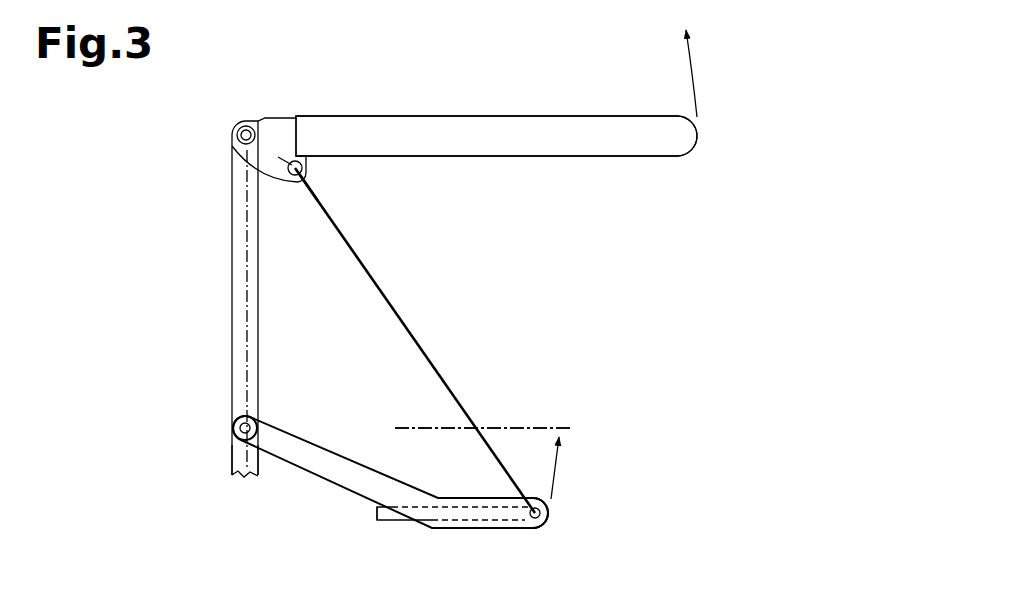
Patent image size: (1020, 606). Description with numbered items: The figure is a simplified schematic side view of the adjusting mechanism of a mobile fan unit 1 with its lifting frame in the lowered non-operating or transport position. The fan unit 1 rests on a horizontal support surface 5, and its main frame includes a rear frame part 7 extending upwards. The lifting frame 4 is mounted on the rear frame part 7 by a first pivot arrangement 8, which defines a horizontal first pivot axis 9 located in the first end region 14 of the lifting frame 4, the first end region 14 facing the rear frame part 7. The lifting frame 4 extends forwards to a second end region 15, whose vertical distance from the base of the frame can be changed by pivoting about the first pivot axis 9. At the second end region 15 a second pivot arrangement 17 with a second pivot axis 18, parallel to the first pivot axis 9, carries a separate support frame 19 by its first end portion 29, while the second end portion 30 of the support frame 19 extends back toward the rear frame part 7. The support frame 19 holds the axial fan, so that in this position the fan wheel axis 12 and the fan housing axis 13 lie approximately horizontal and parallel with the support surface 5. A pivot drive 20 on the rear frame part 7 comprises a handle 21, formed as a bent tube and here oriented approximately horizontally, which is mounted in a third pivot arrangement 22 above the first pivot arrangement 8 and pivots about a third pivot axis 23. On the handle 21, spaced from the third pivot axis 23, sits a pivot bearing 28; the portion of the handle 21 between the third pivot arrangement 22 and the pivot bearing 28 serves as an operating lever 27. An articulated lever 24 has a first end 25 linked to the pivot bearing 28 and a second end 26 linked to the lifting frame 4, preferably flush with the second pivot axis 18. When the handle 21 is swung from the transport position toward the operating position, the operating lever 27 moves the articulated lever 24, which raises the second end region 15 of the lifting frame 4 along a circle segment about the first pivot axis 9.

The fan unit 1 is at (722, 96).
The lifting frame 4 is at (300, 452).
The support surface 5 is at (668, 605).
The rear frame part 7 is at (237, 226).
The first pivot arrangement 8 is at (232, 415).
The first pivot axis 9 is at (245, 428).
The fan wheel axis 12 is at (556, 426).
The fan housing axis 13 is at (556, 426).
The first end region 14 is at (240, 448).
The second end region 15 is at (541, 538).
The second pivot arrangement 17 is at (553, 505).
The second pivot axis 18 is at (546, 513).
The support frame 19 is at (386, 519).
The pivot drive 20 is at (440, 113).
The handle 21 is at (532, 136).
The third pivot arrangement 22 is at (240, 118).
The third pivot axis 23 is at (246, 135).
The articulated lever 24 is at (368, 266).
The first end 25 is at (320, 186).
The second end 26 is at (541, 493).
The operating lever 27 is at (273, 152).
The pivot bearing 28 is at (296, 165).
The first end portion 29 is at (525, 511).
The second end portion 30 is at (376, 513).